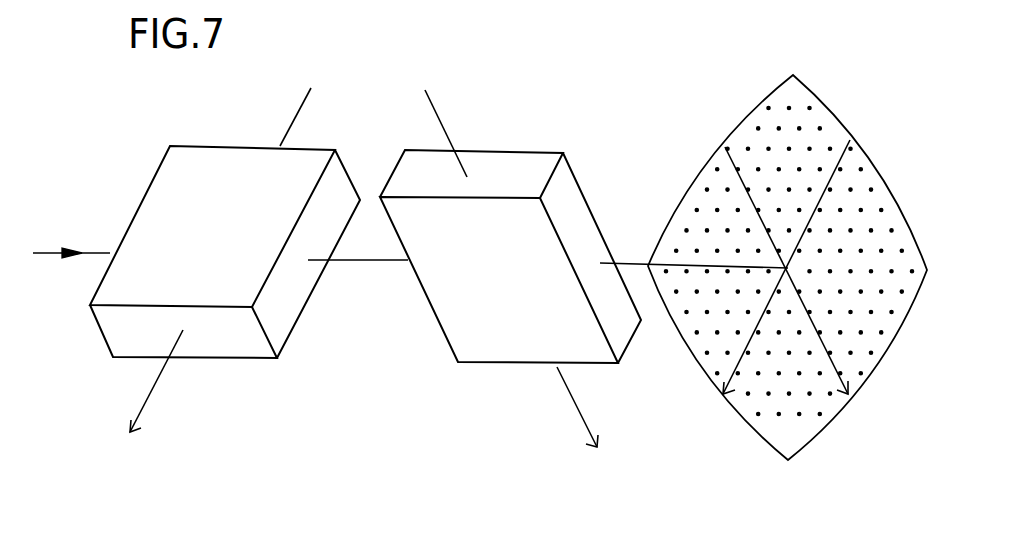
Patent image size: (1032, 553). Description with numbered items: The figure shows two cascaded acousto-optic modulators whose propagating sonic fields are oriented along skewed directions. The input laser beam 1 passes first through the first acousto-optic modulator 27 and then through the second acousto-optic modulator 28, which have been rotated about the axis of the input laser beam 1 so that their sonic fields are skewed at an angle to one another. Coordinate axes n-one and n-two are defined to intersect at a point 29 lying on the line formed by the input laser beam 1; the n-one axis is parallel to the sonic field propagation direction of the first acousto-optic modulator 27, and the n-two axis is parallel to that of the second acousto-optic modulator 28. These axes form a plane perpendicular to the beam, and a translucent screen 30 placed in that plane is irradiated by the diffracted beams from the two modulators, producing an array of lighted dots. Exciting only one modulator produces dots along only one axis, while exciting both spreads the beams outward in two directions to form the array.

The input laser beam 1 is at (107, 250).
The first acousto-optic modulator 27 is at (223, 360).
The second acousto-optic modulator 28 is at (505, 365).
The point 29 is at (790, 266).
The translucent screen 30 is at (753, 108).